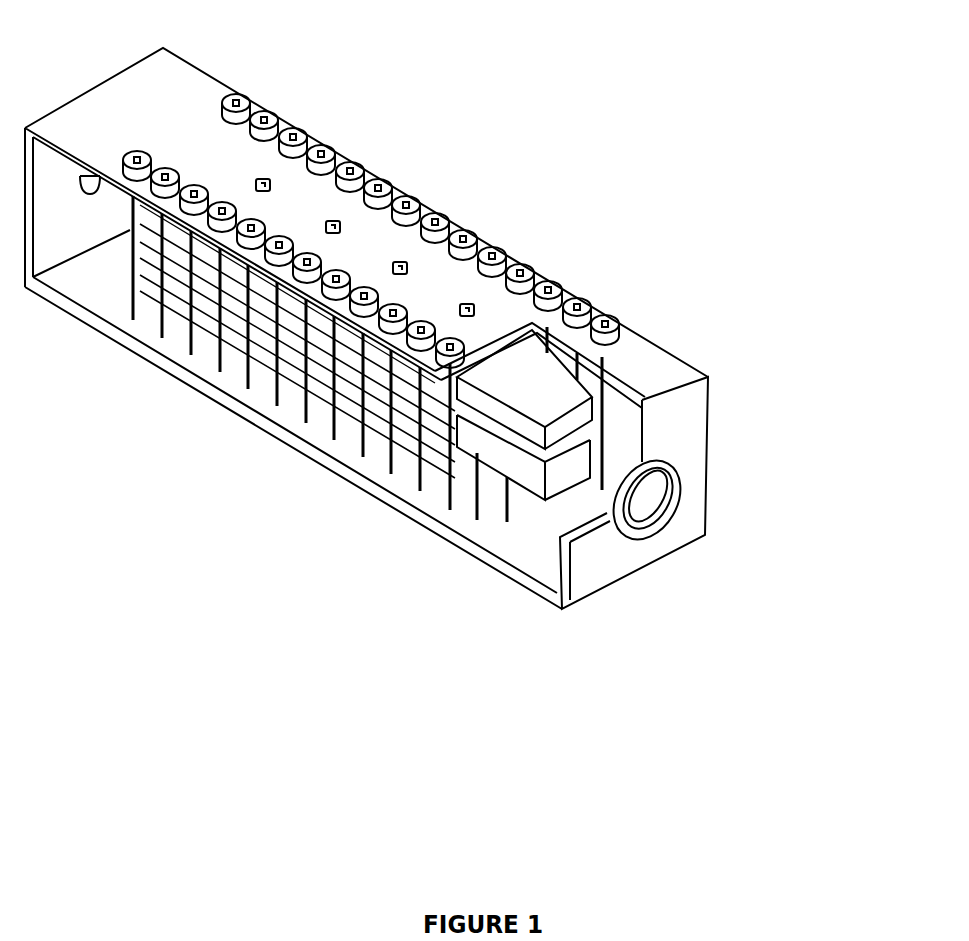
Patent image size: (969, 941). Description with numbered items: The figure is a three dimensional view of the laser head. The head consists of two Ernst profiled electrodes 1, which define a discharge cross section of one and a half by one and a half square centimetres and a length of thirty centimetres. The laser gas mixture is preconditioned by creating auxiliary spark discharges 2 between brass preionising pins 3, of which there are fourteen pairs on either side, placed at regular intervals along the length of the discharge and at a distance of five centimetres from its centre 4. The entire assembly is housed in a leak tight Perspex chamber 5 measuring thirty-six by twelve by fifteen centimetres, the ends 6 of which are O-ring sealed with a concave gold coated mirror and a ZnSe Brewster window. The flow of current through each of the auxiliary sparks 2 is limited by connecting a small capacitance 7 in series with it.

The Ernst profiled electrodes 1 is at (613, 427).
The auxiliary spark discharges 2 is at (390, 417).
The brass preionising pins 3 is at (203, 340).
The centre of the discharge 4 is at (553, 470).
The Perspex chamber 5 is at (690, 433).
The ends of the chamber 6 is at (616, 525).
The capacitance 7 is at (253, 100).